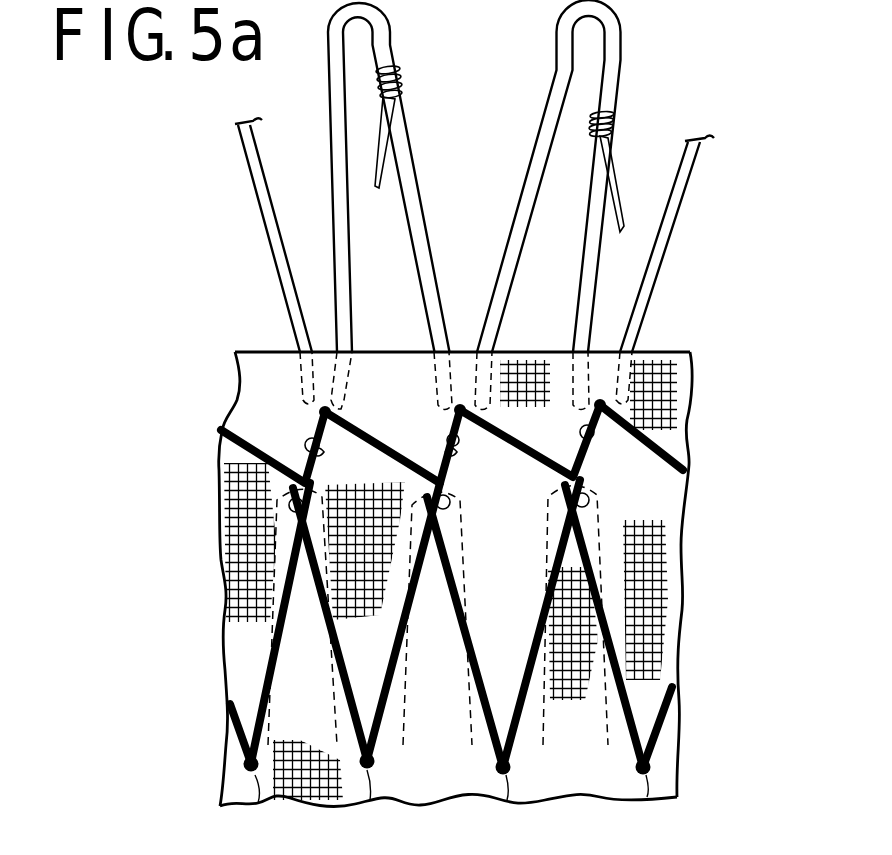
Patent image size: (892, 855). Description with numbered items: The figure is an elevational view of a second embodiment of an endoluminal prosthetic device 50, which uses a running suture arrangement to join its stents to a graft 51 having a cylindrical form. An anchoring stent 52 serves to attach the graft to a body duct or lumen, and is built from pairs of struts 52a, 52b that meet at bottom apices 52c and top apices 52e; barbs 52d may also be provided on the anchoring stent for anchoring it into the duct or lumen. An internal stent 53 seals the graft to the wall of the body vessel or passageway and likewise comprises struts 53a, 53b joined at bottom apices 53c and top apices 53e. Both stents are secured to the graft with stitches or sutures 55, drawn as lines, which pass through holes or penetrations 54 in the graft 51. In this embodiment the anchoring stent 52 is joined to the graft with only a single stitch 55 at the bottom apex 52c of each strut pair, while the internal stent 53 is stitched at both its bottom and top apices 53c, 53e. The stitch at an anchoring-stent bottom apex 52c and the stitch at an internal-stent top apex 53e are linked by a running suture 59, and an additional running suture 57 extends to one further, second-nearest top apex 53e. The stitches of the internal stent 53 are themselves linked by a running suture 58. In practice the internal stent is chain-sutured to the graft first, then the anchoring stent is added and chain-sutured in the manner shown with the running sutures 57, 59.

The endoluminal prosthetic device 50 is at (717, 735).
The graft 51 is at (268, 350).
The anchoring stent 52 is at (505, 275).
The strut 52a is at (406, 135).
The strut 52b is at (557, 70).
The bottom apex 52c is at (440, 378).
The barb 52d is at (381, 178).
The top apex 52e is at (390, 4).
The internal stent 53 is at (460, 700).
The strut 53a is at (470, 622).
The strut 53b is at (552, 703).
The bottom apex 53c is at (585, 802).
The top apex 53e is at (450, 503).
The hole 54 is at (313, 388).
The stitch 55 is at (318, 415).
The running suture 57 is at (448, 440).
The running suture 58 is at (268, 642).
The running suture 59 is at (317, 458).